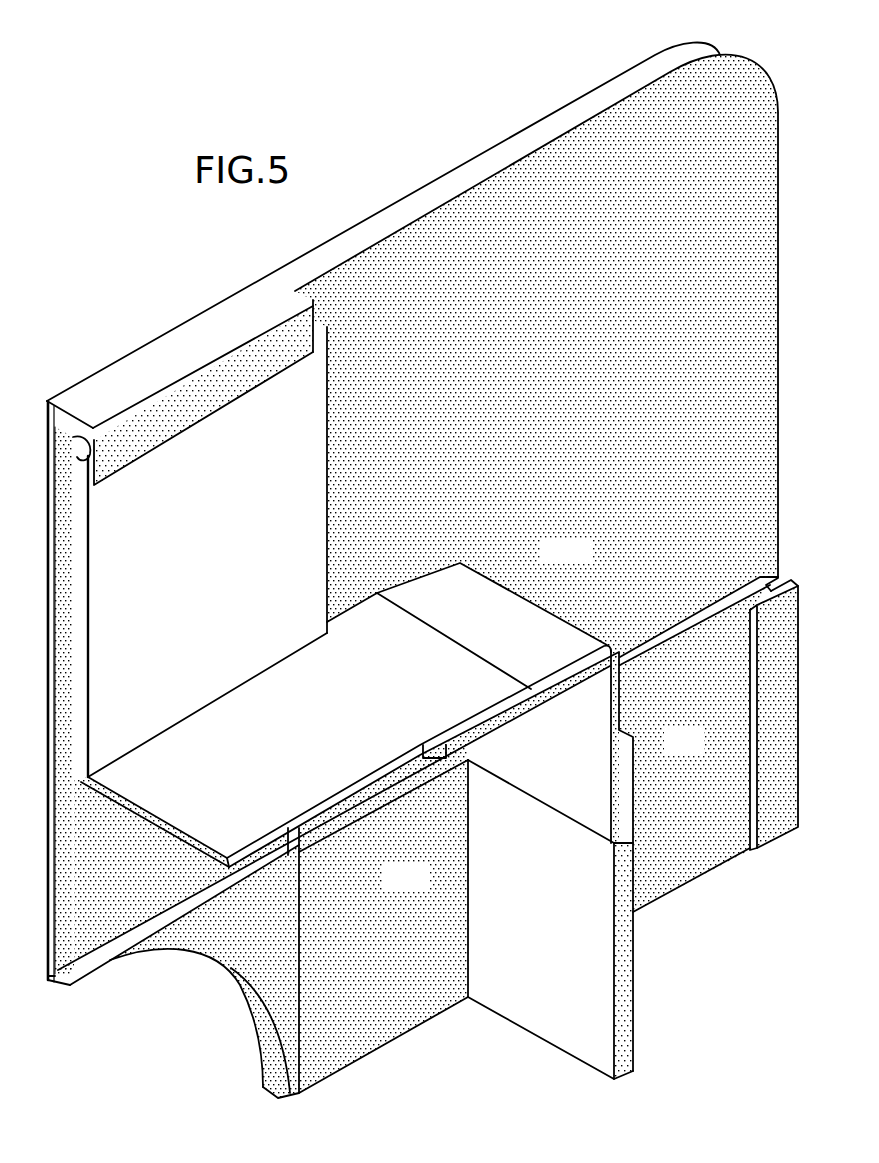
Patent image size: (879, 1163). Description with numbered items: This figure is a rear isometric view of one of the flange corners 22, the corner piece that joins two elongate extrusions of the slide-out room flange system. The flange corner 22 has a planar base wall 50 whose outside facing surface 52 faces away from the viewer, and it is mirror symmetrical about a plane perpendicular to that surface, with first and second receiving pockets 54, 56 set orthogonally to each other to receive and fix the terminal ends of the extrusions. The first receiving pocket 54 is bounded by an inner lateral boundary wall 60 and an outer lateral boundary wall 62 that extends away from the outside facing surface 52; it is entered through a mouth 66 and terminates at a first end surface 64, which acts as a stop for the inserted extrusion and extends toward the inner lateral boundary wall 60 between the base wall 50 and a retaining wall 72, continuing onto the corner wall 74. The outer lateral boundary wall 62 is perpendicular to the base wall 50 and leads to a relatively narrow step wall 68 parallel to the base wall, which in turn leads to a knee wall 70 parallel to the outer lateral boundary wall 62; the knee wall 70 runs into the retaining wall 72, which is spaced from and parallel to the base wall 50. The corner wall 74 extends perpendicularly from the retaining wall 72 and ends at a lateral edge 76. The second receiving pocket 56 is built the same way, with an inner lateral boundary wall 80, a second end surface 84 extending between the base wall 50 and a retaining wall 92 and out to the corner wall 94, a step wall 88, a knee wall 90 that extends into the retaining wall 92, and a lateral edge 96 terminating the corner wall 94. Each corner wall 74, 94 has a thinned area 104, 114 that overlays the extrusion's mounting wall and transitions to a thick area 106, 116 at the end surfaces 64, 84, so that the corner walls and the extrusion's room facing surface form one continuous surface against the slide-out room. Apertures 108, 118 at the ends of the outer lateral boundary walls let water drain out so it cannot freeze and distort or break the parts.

The flange corner 22 is at (497, 106).
The planar base wall 50 is at (429, 186).
The outside facing surface 52 is at (302, 251).
The first receiving pocket 54 is at (42, 802).
The second receiving pocket 56 is at (687, 912).
The inner lateral boundary wall 60 is at (182, 910).
The outer lateral boundary wall 62 is at (106, 390).
The first end surface 64 is at (423, 745).
The mouth 66 is at (78, 680).
The step wall 68 is at (190, 400).
The knee wall 70 is at (152, 455).
The retaining wall 72 is at (238, 590).
The corner wall 74 is at (268, 810).
The lateral edge 76 is at (383, 777).
The inner lateral boundary wall 80 is at (305, 1048).
The second end surface 84 is at (614, 841).
The step wall 88 is at (799, 797).
The knee wall 90 is at (752, 803).
The retaining wall 92 is at (699, 758).
The corner wall 94 is at (578, 936).
The lateral edge 96 is at (630, 1020).
The thinned area 104 is at (217, 722).
The thick area 106 is at (479, 664).
The aperture 108 is at (322, 286).
The thinned area 114 is at (543, 1001).
The thick area 116 is at (540, 778).
The aperture 118 is at (773, 586).